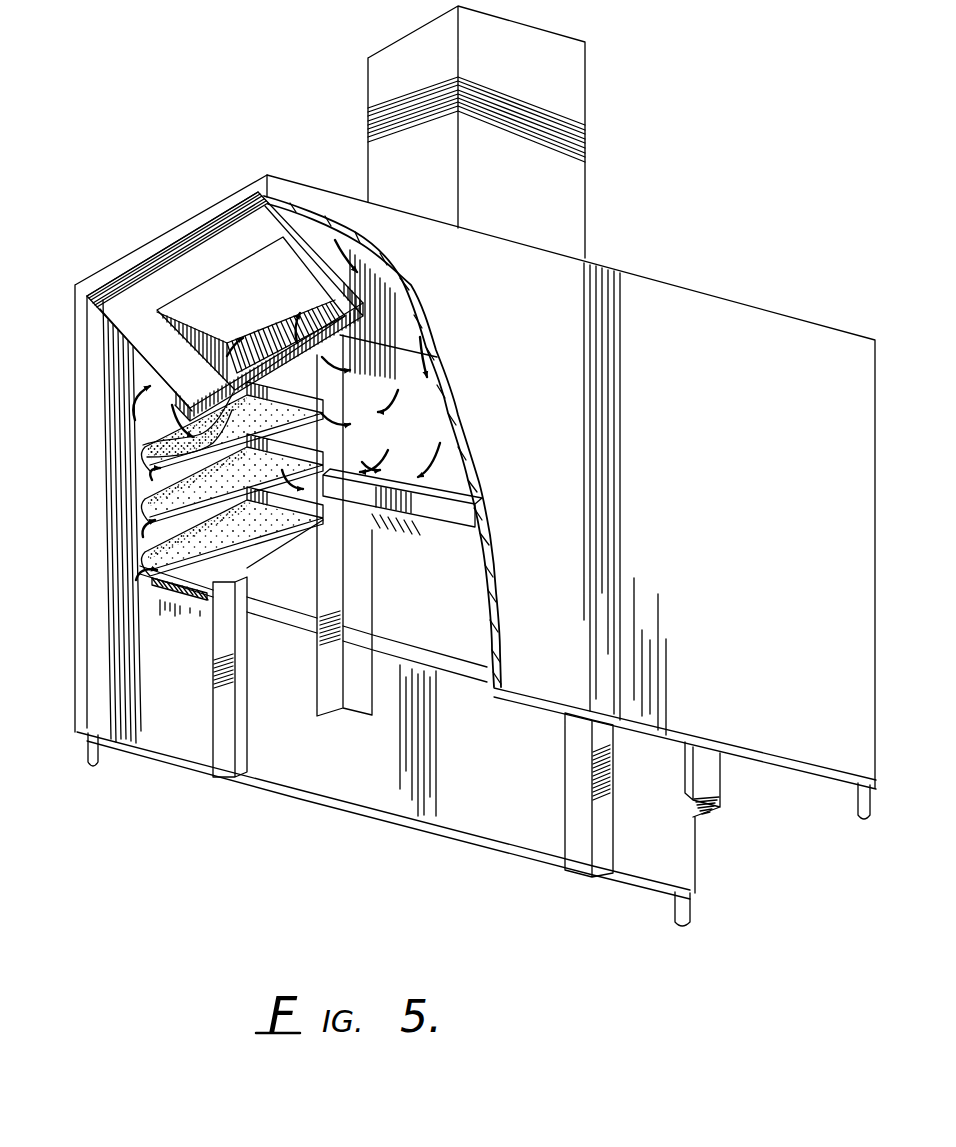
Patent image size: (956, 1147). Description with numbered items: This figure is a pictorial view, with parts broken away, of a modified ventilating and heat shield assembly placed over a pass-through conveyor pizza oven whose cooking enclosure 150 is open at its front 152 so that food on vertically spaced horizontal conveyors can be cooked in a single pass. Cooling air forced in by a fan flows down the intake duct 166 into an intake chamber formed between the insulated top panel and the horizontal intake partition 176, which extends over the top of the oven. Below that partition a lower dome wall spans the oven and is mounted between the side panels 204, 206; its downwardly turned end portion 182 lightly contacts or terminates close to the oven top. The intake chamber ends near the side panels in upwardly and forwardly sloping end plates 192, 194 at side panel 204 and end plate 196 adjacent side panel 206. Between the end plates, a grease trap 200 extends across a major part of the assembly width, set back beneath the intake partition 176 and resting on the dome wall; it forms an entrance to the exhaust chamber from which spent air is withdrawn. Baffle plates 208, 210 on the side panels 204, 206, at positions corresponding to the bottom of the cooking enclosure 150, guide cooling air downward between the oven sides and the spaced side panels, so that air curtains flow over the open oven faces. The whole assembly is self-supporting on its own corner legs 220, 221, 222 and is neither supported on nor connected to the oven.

The cooking enclosure 150 is at (450, 470).
The front 152 is at (118, 447).
The intake duct 166 is at (586, 165).
The intake partition 176 is at (350, 242).
The downwardly turned end portion 182 is at (360, 317).
The end plate 192 is at (145, 341).
The end plate 194 is at (203, 258).
The end plate 196 is at (322, 270).
The grease trap 200 is at (302, 298).
The side panel 204 is at (93, 492).
The side panel 206 is at (680, 510).
The baffle plate 208 is at (170, 603).
The baffle plate 210 is at (390, 540).
The corner leg 220 is at (98, 766).
The corner leg 221 is at (692, 914).
The corner leg 222 is at (857, 807).